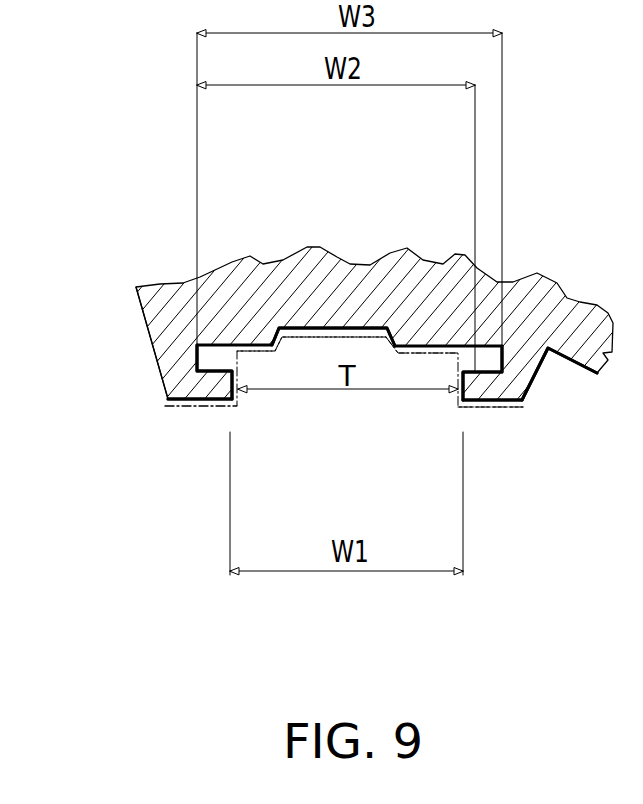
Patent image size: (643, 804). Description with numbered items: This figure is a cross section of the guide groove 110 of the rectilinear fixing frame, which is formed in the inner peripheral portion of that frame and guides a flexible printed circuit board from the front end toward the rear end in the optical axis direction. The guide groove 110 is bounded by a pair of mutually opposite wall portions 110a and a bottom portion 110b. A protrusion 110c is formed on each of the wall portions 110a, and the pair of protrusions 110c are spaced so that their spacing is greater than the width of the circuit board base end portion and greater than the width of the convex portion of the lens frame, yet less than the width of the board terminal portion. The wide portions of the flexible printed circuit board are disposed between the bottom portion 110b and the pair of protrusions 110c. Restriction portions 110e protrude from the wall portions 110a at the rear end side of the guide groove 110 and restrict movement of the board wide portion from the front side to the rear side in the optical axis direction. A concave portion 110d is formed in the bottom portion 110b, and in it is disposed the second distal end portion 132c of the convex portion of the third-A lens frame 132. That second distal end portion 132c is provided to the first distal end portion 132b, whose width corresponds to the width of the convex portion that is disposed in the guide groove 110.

The guide groove 110 is at (347, 418).
The wall portion 110a is at (155, 350).
The bottom portion 110b is at (245, 352).
The protrusion 110c is at (212, 407).
The concave portion 110d is at (330, 333).
The restriction portion 110e is at (483, 358).
The third-A lens frame 132 is at (352, 328).
The first distal end portion 132b is at (422, 370).
The second distal end portion 132c is at (303, 340).